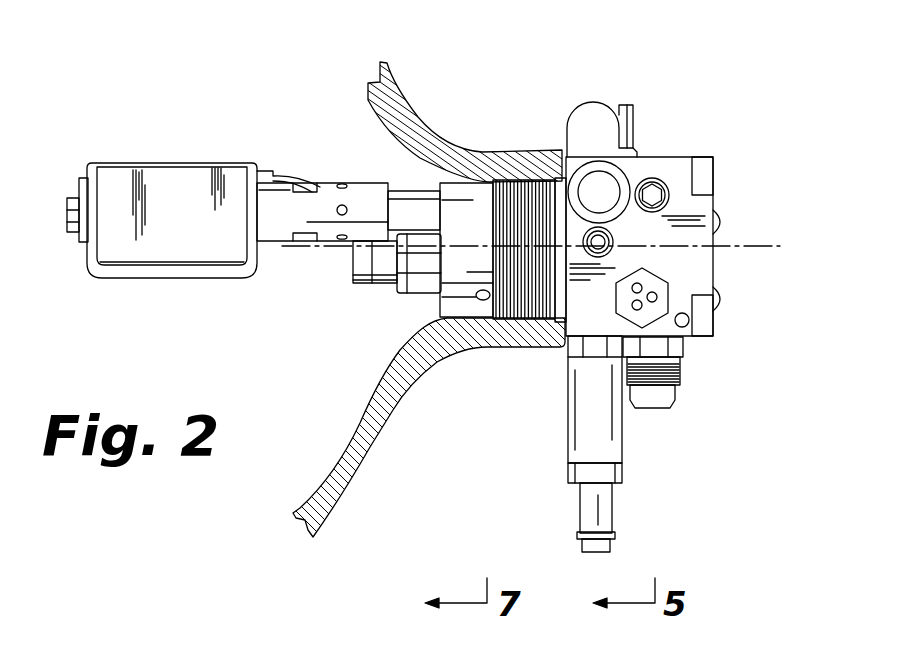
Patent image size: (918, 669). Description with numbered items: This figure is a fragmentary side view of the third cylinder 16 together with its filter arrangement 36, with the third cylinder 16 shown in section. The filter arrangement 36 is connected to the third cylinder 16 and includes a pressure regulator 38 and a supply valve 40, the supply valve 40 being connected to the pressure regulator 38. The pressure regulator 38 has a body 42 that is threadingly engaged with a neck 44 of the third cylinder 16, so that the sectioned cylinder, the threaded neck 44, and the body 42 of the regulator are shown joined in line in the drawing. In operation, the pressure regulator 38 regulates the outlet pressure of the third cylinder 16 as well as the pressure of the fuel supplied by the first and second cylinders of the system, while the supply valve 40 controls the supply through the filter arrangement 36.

The third cylinder 16 is at (398, 85).
The supply valve 40 is at (357, 182).
The neck 44 is at (512, 150).
The filter arrangement 36 is at (689, 306).
The pressure regulator 38 is at (713, 177).
The body 42 is at (713, 263).